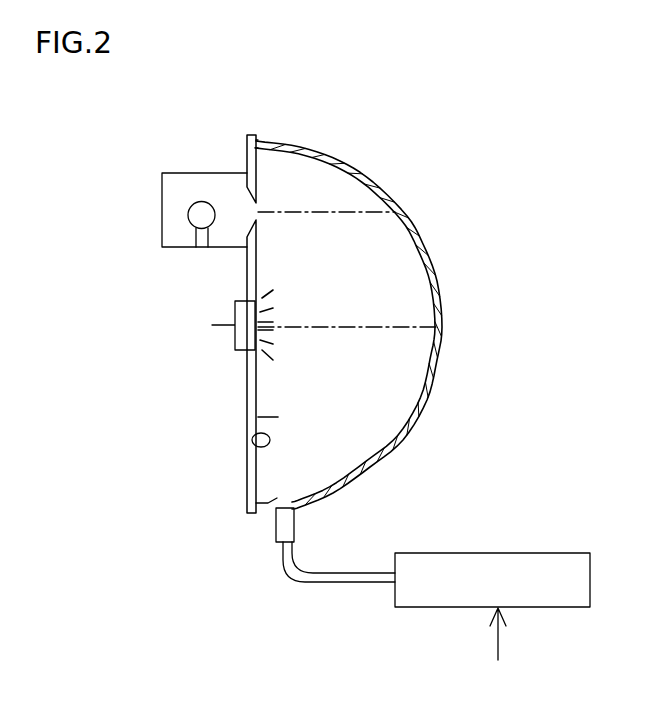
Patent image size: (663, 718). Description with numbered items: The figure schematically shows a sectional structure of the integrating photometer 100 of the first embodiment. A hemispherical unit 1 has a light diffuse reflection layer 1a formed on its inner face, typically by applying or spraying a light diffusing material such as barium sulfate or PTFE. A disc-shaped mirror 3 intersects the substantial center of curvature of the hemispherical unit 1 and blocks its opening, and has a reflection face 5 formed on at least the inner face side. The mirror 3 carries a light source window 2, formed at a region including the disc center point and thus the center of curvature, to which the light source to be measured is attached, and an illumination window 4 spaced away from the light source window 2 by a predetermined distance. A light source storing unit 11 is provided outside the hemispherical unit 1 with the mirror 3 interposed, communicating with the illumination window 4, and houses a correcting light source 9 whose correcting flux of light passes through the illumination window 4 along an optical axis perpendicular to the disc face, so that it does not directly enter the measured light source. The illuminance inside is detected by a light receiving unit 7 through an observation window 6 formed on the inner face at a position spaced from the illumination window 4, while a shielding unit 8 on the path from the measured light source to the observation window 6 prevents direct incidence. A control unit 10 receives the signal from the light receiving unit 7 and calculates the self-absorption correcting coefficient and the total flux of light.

The integrating photometer 100 is at (497, 90).
The hemispherical unit 1 is at (441, 316).
The light diffuse reflection layer 1a is at (423, 250).
The light source window 2 is at (282, 303).
The mirror 3 is at (250, 370).
The illumination window 4 is at (260, 203).
The reflection face 5 is at (250, 447).
The observation window 6 is at (283, 507).
The light receiving unit 7 is at (294, 523).
The shielding unit 8 is at (268, 416).
The correcting light source 9 is at (198, 207).
The control unit 10 is at (553, 563).
The light source storing unit 11 is at (167, 173).